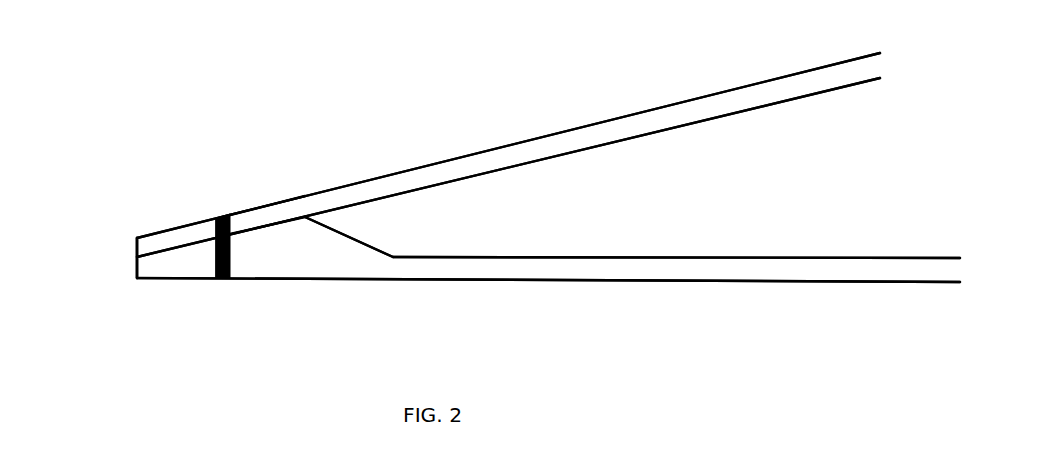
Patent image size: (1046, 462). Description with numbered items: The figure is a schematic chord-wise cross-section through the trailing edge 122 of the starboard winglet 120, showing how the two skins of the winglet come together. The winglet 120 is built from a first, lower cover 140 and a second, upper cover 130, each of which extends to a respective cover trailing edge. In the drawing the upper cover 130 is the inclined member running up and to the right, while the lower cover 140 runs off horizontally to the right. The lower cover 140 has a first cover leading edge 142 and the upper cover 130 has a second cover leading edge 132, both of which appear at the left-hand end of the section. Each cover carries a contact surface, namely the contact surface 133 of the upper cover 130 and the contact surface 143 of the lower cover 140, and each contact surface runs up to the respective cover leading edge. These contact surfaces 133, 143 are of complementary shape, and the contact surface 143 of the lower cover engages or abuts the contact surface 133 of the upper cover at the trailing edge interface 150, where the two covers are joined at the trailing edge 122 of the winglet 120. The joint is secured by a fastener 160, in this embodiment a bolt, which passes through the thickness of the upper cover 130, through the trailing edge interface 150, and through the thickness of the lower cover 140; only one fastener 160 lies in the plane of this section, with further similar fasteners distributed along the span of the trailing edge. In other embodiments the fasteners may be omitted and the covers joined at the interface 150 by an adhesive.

The starboard winglet 120 is at (668, 50).
The trailing edge 122 is at (109, 256).
The second (upper) cover 130 is at (560, 147).
The second cover leading edge 132 is at (137, 250).
The contact surface 133 is at (248, 232).
The first (lower) cover 140 is at (619, 273).
The first cover leading edge 142 is at (137, 268).
The contact surface 143 is at (272, 227).
The trailing edge interface 150 is at (313, 230).
The fastener 160 is at (230, 277).